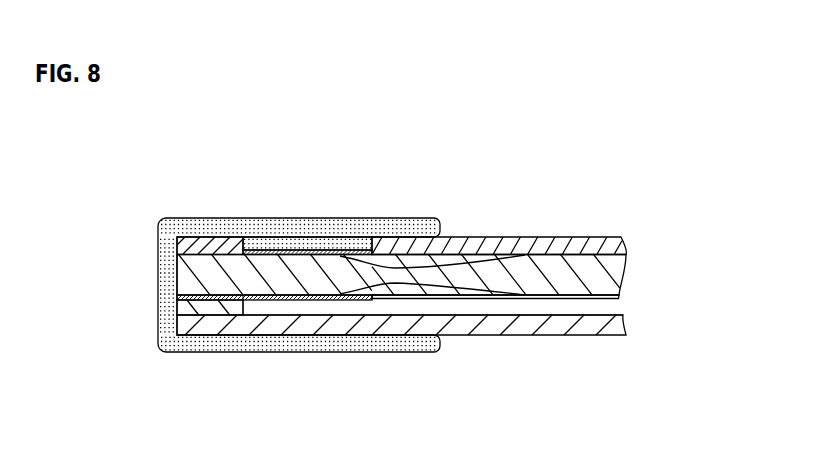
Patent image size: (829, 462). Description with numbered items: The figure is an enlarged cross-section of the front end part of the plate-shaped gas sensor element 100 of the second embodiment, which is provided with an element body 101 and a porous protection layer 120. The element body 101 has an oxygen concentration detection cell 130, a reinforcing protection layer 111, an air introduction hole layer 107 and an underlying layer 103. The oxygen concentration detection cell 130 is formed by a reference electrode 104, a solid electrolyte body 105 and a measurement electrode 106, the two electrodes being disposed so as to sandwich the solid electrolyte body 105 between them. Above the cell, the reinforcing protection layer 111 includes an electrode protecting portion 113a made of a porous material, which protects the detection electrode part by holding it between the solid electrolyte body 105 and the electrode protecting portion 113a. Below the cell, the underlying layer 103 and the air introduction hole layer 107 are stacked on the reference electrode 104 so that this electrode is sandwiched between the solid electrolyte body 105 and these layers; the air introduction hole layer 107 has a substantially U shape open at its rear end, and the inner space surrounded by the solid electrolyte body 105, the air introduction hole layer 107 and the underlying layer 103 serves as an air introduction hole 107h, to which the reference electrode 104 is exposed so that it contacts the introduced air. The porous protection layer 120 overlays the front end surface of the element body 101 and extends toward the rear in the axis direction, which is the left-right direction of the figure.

The plate-shaped gas sensor element 100 is at (541, 188).
The element body 101 is at (741, 233).
The underlying layer 103 is at (192, 325).
The reference electrode 104 is at (615, 298).
The solid electrolyte body 105 is at (575, 284).
The measurement electrode 106 is at (615, 251).
The air introduction hole layer 107 is at (178, 306).
The air introduction hole 107h is at (518, 305).
The reinforcing protection layer 111 is at (624, 240).
The electrode protecting portion 113a is at (327, 238).
The porous protection layer 120 is at (230, 227).
The oxygen concentration detection cell 130 is at (692, 235).